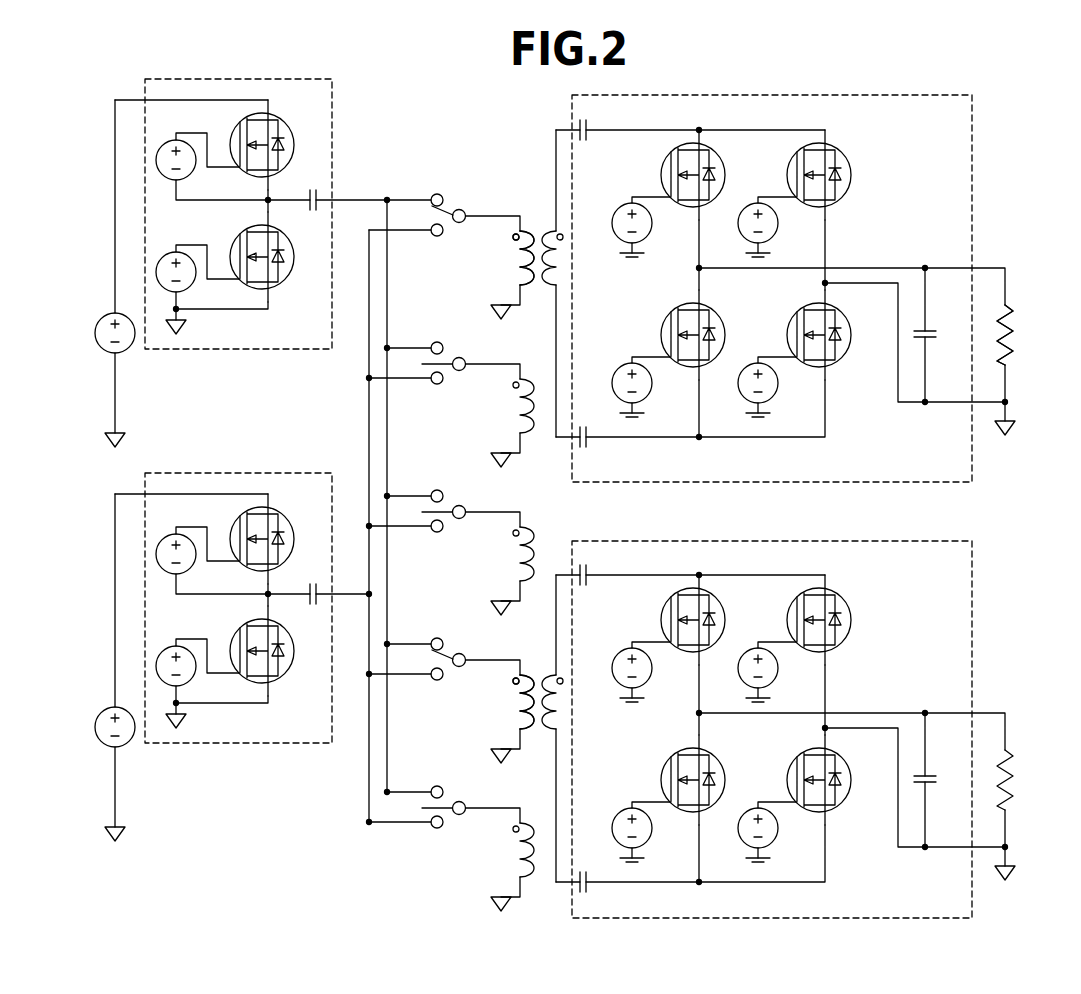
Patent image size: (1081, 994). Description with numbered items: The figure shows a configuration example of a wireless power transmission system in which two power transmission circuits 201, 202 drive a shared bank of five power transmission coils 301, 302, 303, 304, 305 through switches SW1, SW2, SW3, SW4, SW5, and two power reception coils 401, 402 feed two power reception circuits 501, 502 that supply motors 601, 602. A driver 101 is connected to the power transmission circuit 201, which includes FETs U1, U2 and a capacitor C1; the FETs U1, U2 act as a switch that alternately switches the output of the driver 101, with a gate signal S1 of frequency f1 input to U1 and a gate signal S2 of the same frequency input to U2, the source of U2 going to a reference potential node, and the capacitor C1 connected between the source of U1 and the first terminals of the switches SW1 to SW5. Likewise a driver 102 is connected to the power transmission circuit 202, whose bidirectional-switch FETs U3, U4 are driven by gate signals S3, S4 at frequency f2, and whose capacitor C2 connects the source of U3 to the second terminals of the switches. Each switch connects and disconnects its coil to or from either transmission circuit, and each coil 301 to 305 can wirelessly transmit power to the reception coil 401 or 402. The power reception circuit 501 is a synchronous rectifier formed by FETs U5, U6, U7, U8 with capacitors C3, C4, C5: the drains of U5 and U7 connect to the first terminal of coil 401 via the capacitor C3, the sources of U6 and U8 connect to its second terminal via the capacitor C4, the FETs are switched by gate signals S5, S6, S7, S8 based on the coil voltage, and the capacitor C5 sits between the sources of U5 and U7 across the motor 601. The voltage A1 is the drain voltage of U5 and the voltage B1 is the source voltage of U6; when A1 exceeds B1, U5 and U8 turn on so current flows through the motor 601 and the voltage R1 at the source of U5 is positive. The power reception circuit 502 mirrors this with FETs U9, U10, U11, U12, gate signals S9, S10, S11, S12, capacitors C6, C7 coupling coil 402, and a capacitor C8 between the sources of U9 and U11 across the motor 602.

The driver 101 is at (102, 316).
The driver 102 is at (102, 708).
The power transmission circuit 201 is at (224, 78).
The power transmission circuit 202 is at (236, 473).
The FET U1 is at (286, 121).
The FET U2 is at (286, 283).
The FET U3 is at (286, 515).
The FET U4 is at (286, 677).
The gate signal S1 is at (176, 133).
The gate signal S2 is at (176, 245).
The gate signal S3 is at (176, 527).
The gate signal S4 is at (176, 639).
The capacitor C1 is at (313, 189).
The capacitor C2 is at (313, 583).
The switch SW1 is at (448, 198).
The switch SW2 is at (448, 346).
The switch SW3 is at (448, 494).
The switch SW4 is at (448, 642).
The switch SW5 is at (448, 790).
The power transmission coil 301 is at (508, 260).
The power transmission coil 302 is at (508, 408).
The power transmission coil 303 is at (508, 556).
The power transmission coil 304 is at (508, 704).
The power transmission coil 305 is at (508, 852).
The power reception coil 401 is at (566, 272).
The power reception coil 402 is at (566, 717).
The power reception circuit 501 is at (746, 95).
The power reception circuit 502 is at (746, 541).
The capacitor C3 is at (590, 120).
The capacitor C4 is at (586, 426).
The capacitor C6 is at (590, 565).
The capacitor C7 is at (586, 871).
The voltage A1 is at (700, 128).
The voltage B1 is at (700, 440).
The FET U5 is at (718, 153).
The FET U6 is at (718, 313).
The FET U7 is at (852, 165).
The FET U8 is at (843, 358).
The FET U9 is at (718, 598).
The FET U10 is at (718, 758).
The FET U11 is at (852, 611).
The FET U12 is at (843, 803).
The gate signal S5 is at (648, 195).
The gate signal S6 is at (648, 355).
The gate signal S7 is at (786, 200).
The gate signal S8 is at (786, 360).
The gate signal S9 is at (648, 640).
The gate signal S10 is at (648, 800).
The gate signal S11 is at (784, 645).
The gate signal S12 is at (784, 805).
The capacitor C5 is at (938, 330).
The capacitor C8 is at (938, 775).
The voltage R1 is at (995, 266).
The motor 601 is at (1012, 338).
The motor 602 is at (1012, 783).